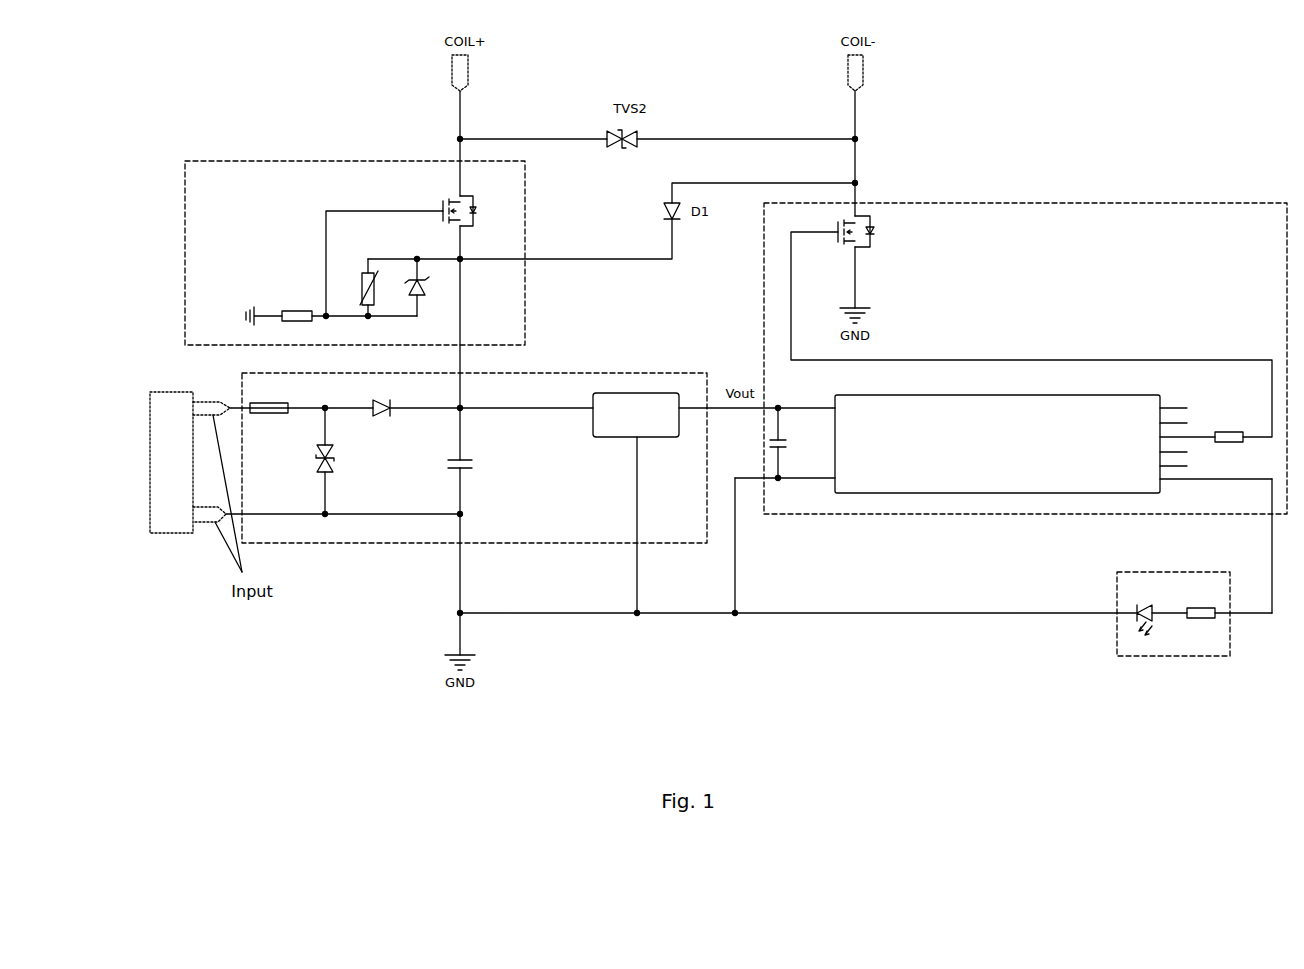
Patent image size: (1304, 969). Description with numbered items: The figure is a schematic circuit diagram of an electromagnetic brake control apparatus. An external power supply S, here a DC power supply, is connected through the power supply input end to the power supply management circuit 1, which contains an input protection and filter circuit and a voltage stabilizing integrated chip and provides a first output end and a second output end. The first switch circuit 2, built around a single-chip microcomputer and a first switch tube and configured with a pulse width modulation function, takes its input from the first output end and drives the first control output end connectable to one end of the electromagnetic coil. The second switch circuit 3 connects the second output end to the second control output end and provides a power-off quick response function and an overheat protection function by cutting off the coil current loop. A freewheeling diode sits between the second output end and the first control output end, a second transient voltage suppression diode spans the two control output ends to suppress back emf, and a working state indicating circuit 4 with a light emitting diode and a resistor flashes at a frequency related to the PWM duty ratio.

The power supply management circuit 1 is at (567, 373).
The first switch circuit 2 is at (1046, 203).
The second switch circuit 3 is at (270, 161).
The working state indicating circuit 4 is at (1174, 572).
The external power supply S is at (172, 533).